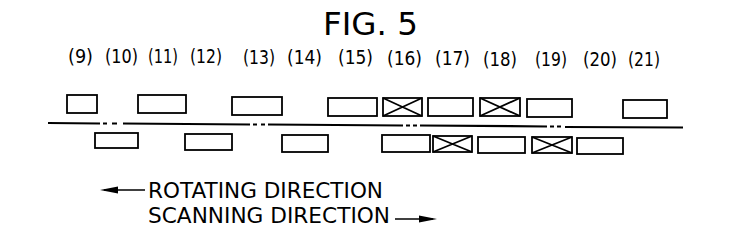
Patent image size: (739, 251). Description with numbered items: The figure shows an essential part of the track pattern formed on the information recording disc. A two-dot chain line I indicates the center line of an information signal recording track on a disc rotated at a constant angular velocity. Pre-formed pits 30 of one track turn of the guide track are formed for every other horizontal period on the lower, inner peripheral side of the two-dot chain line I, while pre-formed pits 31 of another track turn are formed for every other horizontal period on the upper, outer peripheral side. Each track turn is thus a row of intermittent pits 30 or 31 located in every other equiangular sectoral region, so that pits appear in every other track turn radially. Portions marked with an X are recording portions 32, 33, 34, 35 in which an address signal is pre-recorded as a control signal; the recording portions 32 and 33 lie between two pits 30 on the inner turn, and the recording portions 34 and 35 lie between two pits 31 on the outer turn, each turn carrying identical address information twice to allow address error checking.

The two-dot chain line I is at (58, 122).
The pre-formed pits 30 is at (366, 160).
The pre-formed pits 31 is at (358, 94).
The recording portion 32 is at (454, 153).
The recording portion 33 is at (549, 154).
The recording portion 34 is at (398, 96).
The recording portion 35 is at (498, 96).